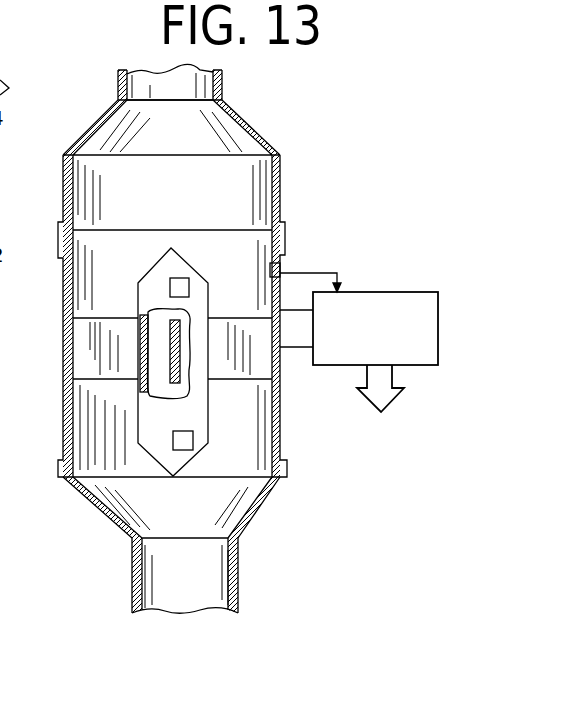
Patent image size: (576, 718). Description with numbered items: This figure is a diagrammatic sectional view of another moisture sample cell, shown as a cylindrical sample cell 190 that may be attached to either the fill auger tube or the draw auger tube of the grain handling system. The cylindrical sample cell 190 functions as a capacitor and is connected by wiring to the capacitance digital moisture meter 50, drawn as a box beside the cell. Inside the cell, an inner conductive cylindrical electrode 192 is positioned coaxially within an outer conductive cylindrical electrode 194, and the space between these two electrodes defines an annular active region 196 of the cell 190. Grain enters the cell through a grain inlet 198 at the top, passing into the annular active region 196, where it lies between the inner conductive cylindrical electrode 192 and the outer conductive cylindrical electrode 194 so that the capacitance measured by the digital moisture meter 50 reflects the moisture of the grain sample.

The cylindrical sample cell 190 is at (298, 169).
The grain inlet 198 is at (143, 73).
The outer conductive cylindrical electrode 194 is at (282, 418).
The inner conductive cylindrical electrode 192 is at (140, 340).
The annular active region 196 is at (98, 365).
The capacitance digital moisture meter 50 is at (371, 292).